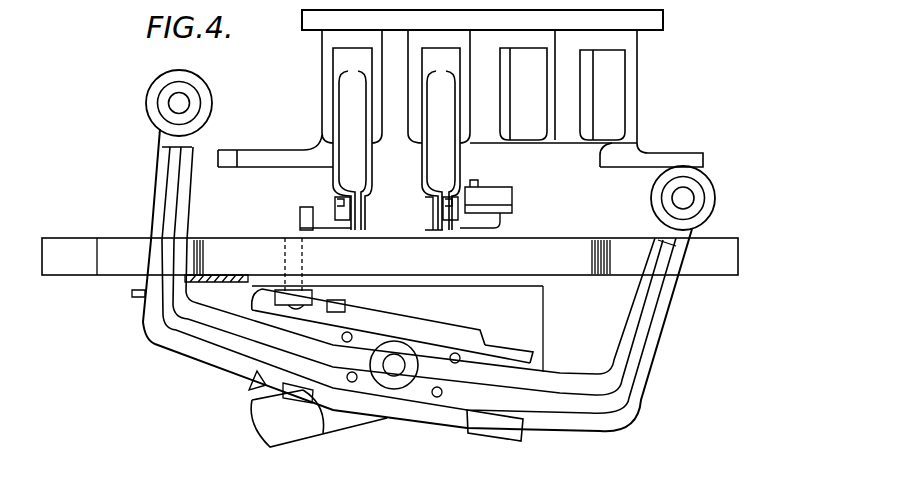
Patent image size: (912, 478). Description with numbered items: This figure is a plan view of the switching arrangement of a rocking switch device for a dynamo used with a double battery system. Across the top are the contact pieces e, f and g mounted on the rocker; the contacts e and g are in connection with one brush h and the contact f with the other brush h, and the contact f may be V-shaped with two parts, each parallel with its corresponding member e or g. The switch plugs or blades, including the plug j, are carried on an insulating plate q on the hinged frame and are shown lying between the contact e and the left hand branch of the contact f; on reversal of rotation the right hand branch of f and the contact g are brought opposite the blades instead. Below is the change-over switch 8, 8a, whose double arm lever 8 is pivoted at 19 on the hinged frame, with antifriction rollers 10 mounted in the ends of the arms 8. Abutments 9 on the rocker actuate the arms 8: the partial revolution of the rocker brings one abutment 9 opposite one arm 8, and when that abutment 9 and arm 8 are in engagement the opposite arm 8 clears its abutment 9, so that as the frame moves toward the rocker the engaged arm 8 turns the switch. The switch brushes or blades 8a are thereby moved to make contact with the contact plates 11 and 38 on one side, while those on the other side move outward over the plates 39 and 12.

The contact piece e is at (326, 62).
The contact piece f is at (507, 70).
The contact piece g is at (630, 80).
The brush h is at (422, 165).
The switch plug or blade j is at (334, 168).
The insulating plate q is at (547, 250).
The double arm lever 8 is at (160, 202).
The switch brush or blade 8a is at (505, 426).
The abutment 9 is at (278, 157).
The antifriction roller 10 is at (212, 103).
The contact plate 11 is at (249, 297).
The contact plate 12 is at (283, 433).
The pivot 19 is at (394, 365).
The contact plate 38 is at (262, 385).
The contact plate 39 is at (535, 347).